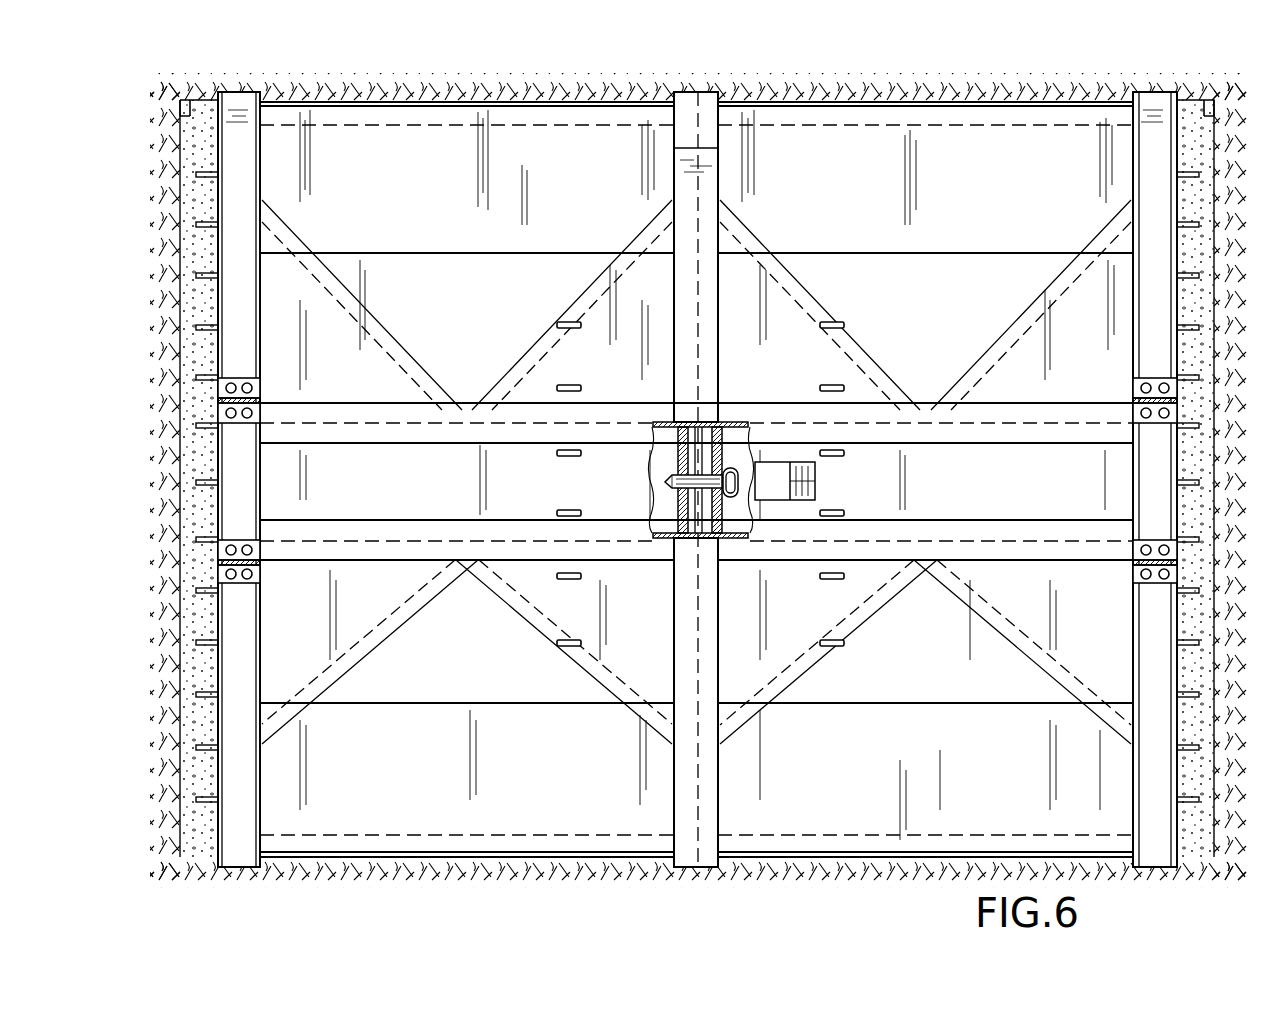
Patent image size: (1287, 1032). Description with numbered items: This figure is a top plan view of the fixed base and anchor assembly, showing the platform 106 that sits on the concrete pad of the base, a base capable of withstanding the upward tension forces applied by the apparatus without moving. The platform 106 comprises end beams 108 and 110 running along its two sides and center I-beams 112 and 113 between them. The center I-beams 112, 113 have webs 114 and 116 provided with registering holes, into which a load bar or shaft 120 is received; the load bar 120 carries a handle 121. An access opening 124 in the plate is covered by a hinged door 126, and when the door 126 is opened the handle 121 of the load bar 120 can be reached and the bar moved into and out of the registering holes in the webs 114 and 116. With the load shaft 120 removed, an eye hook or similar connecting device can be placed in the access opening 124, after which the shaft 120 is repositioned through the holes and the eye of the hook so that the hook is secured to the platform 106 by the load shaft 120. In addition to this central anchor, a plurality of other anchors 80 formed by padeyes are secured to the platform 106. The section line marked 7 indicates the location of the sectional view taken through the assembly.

The platform 106 is at (880, 800).
The end beam 108 is at (1152, 103).
The end beam 110 is at (238, 100).
The center I-beam 112 is at (680, 479).
The center I-beam 113 is at (758, 485).
The web 114 is at (716, 530).
The web 116 is at (680, 461).
The load bar or shaft 120 is at (687, 495).
The handle 121 is at (738, 497).
The access opening 124 is at (856, 421).
The hinged door 126 is at (806, 481).
The anchors 80 is at (561, 323).
The section line 7 is at (152, 480).